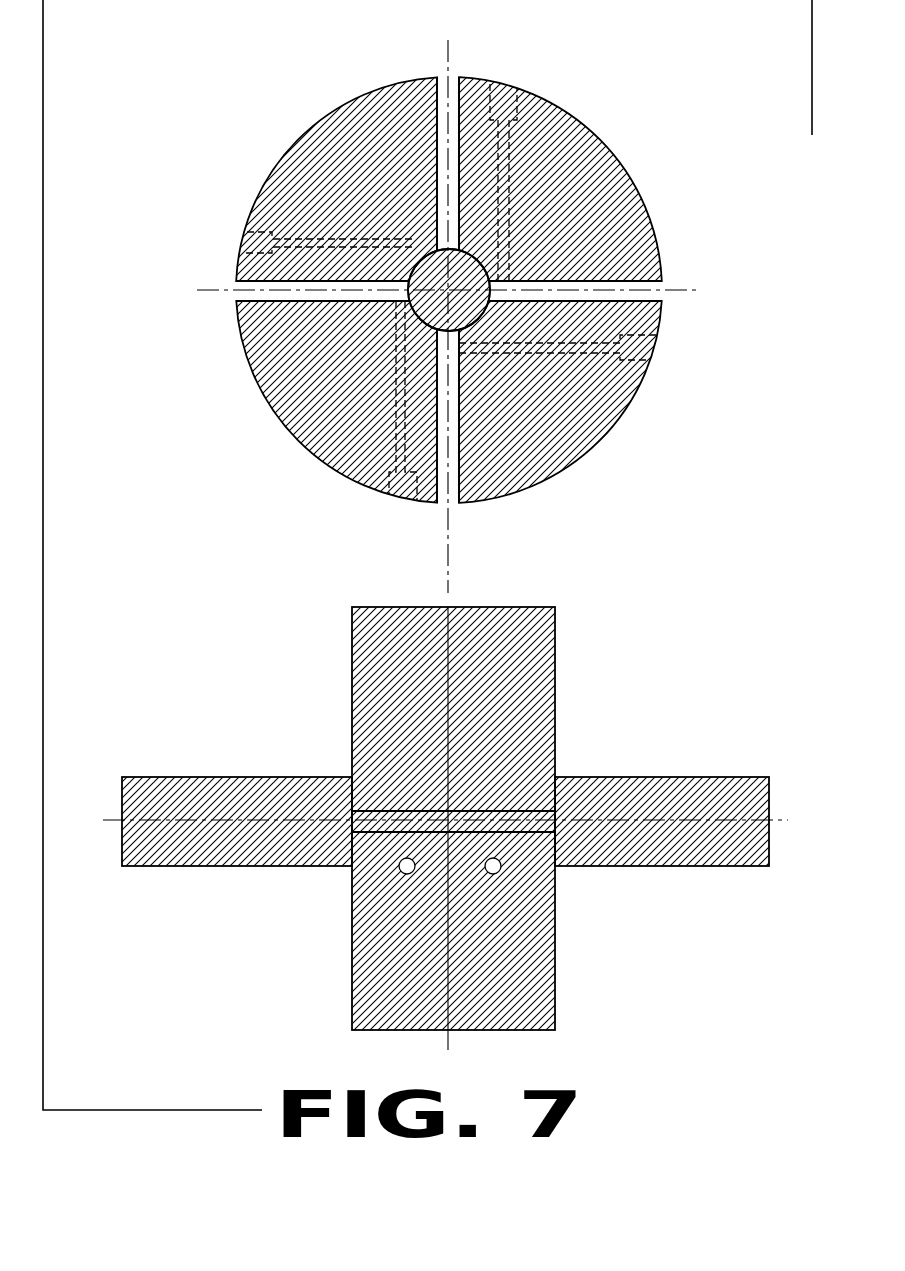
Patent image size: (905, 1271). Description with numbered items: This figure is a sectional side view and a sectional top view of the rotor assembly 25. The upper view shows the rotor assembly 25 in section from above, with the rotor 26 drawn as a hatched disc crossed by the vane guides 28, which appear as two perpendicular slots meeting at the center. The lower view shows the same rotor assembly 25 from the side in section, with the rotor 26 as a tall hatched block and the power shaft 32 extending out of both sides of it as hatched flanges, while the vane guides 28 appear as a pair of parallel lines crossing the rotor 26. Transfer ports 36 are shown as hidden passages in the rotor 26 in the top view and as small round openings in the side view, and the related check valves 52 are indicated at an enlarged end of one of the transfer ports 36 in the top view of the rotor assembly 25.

The rotor assembly 25 is at (692, 150).
The rotor 26 is at (247, 357).
The vane guides 28 is at (459, 487).
The power shaft 32 is at (640, 777).
The transfer ports 36 is at (395, 402).
The check valves 52 is at (627, 359).